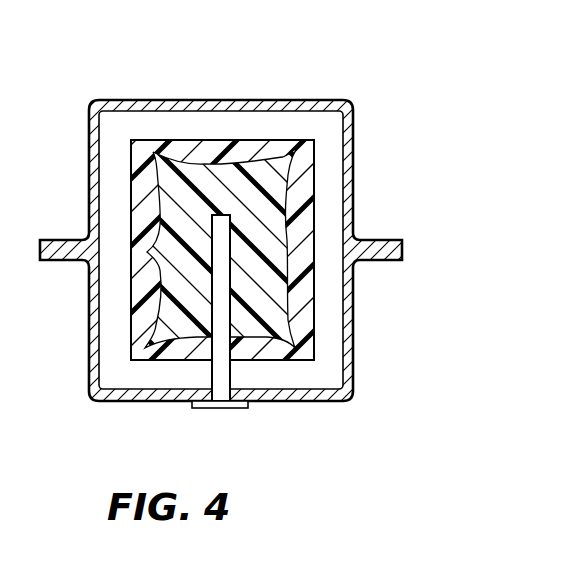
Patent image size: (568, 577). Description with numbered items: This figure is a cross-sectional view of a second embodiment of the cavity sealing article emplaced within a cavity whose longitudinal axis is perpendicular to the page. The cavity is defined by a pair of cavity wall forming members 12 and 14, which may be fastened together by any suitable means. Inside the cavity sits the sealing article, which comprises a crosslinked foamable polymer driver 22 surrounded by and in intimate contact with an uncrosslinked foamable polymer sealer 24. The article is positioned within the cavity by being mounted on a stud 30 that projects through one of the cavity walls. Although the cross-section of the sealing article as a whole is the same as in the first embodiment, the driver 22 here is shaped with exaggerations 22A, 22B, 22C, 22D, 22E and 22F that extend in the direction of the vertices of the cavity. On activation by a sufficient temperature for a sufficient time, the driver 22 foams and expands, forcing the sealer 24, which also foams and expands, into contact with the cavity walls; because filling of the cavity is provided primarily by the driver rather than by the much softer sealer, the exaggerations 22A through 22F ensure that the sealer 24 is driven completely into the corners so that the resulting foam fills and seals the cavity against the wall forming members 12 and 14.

The cavity wall forming member 12 is at (100, 103).
The cavity wall forming member 14 is at (92, 316).
The crosslinked foamable polymer driver 22 is at (284, 288).
The exaggeration 22A is at (153, 152).
The exaggeration 22B is at (288, 163).
The exaggeration 22C is at (297, 245).
The exaggeration 22D is at (293, 339).
The exaggeration 22E is at (148, 347).
The exaggeration 22F is at (147, 252).
The uncrosslinked foamable polymer sealer 24 is at (213, 147).
The stud 30 is at (222, 403).